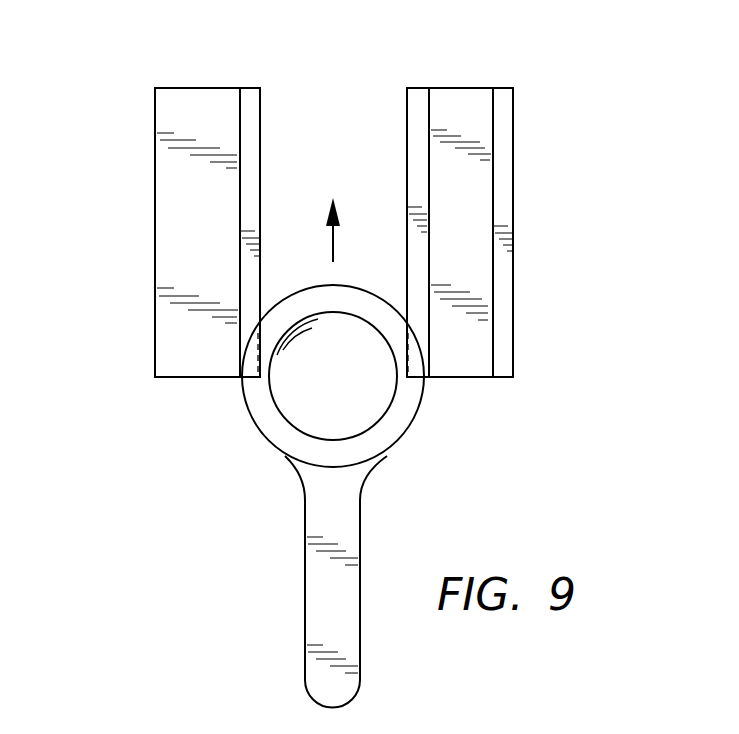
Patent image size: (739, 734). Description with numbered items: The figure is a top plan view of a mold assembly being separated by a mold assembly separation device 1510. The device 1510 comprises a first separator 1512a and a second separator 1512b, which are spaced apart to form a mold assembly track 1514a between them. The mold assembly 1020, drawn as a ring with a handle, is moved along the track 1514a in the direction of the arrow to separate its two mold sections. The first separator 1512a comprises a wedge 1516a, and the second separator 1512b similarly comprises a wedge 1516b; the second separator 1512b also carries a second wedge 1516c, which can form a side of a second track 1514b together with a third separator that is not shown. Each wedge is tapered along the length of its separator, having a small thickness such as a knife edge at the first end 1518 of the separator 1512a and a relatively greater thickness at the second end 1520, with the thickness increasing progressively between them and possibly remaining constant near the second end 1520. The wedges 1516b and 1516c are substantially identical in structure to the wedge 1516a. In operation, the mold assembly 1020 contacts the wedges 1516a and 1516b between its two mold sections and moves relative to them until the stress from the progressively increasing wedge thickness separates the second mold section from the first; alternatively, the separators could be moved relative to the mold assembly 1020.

The mold assembly separation device 1510 is at (566, 143).
The first separator 1512a is at (172, 180).
The second separator 1512b is at (470, 267).
The mold assembly track 1514a is at (348, 167).
The second track 1514b is at (700, 167).
The wedge 1516a is at (255, 130).
The wedge 1516b is at (417, 95).
The second wedge 1516c is at (505, 328).
The first end 1518 is at (194, 378).
The second end 1520 is at (183, 85).
The mold assembly 1020 is at (262, 547).